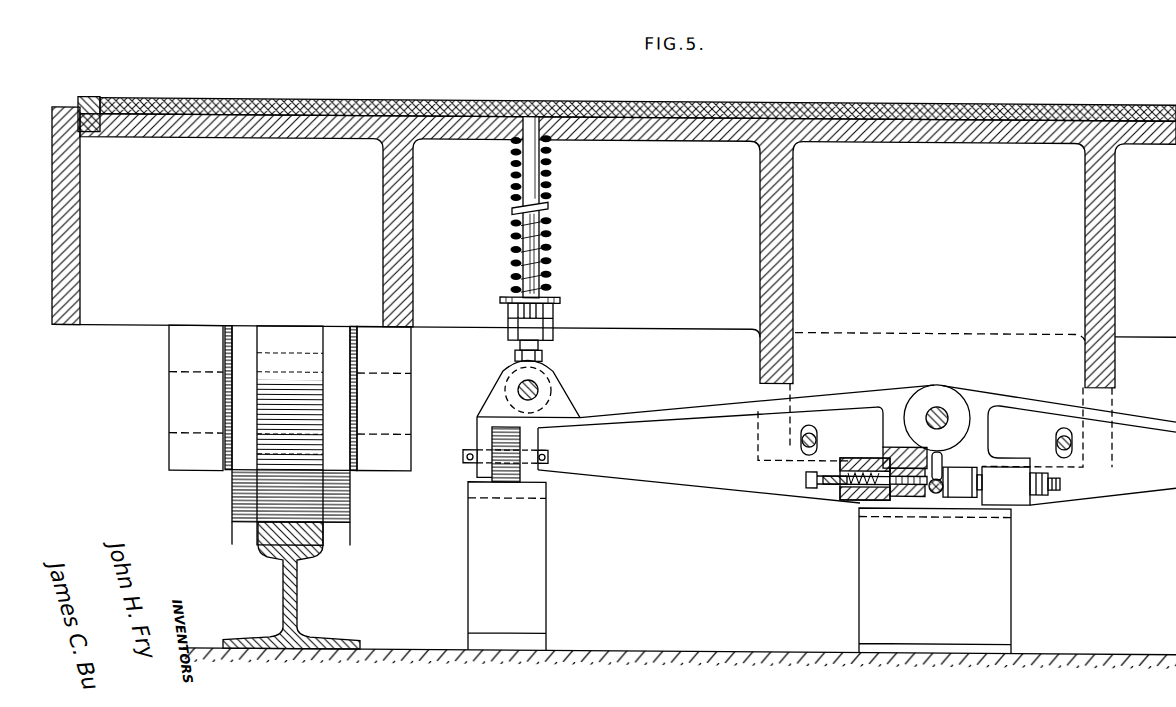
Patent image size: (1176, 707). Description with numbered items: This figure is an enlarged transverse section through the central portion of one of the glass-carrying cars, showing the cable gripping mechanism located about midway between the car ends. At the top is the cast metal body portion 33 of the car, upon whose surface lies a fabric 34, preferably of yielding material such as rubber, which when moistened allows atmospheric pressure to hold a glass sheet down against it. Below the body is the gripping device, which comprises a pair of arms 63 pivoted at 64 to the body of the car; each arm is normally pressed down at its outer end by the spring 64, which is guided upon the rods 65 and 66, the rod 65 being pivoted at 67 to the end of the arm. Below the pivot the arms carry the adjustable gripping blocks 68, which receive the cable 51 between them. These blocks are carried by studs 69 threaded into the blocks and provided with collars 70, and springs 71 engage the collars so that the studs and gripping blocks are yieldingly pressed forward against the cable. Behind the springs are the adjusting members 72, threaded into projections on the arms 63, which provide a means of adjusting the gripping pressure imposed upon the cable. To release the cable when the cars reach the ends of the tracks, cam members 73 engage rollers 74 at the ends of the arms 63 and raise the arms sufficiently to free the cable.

The cast metal body portion 33 is at (381, 214).
The fabric 34 is at (242, 97).
The cable 51 is at (938, 487).
The arms 63 is at (706, 471).
The pivot and spring 64 is at (555, 247).
The rod 65 is at (529, 243).
The rod 66 is at (511, 160).
The pivot 67 is at (540, 387).
The adjustable gripping blocks 68 is at (913, 491).
The studs 69 is at (837, 484).
The collars 70 is at (885, 473).
The springs 71 is at (870, 491).
The adjusting members 72 is at (803, 460).
The cam members 73 is at (530, 529).
The rollers 74 is at (500, 452).